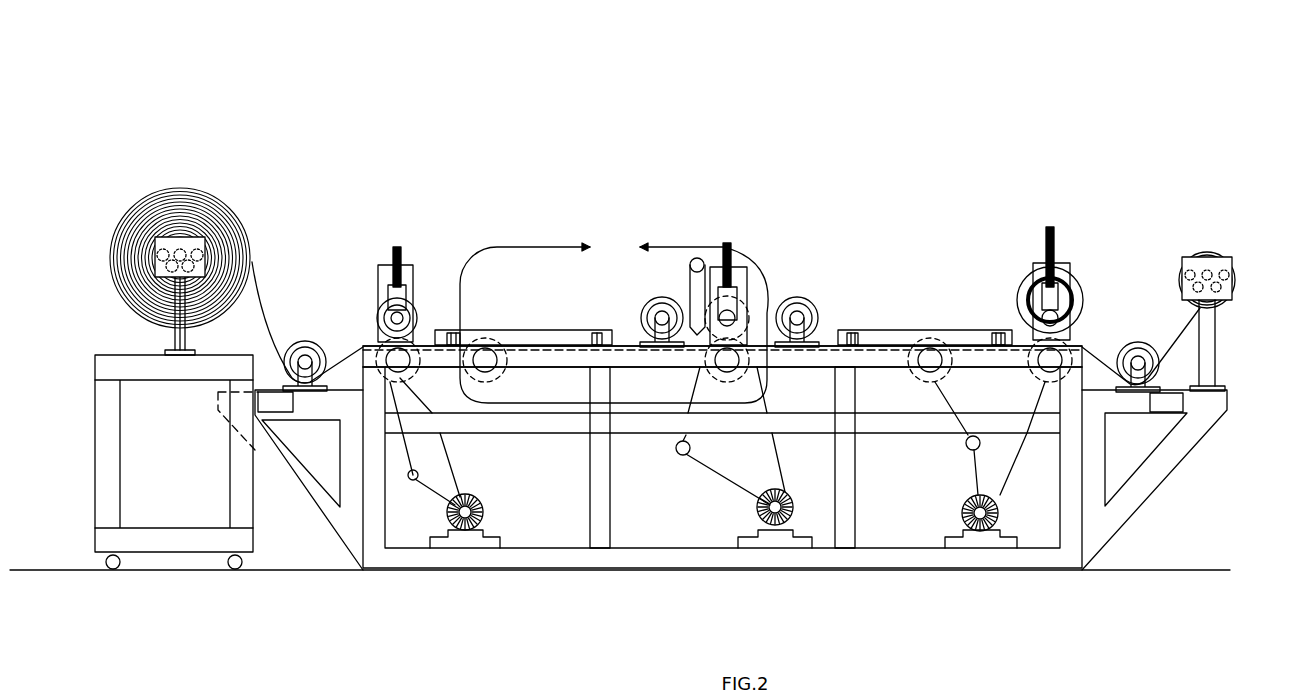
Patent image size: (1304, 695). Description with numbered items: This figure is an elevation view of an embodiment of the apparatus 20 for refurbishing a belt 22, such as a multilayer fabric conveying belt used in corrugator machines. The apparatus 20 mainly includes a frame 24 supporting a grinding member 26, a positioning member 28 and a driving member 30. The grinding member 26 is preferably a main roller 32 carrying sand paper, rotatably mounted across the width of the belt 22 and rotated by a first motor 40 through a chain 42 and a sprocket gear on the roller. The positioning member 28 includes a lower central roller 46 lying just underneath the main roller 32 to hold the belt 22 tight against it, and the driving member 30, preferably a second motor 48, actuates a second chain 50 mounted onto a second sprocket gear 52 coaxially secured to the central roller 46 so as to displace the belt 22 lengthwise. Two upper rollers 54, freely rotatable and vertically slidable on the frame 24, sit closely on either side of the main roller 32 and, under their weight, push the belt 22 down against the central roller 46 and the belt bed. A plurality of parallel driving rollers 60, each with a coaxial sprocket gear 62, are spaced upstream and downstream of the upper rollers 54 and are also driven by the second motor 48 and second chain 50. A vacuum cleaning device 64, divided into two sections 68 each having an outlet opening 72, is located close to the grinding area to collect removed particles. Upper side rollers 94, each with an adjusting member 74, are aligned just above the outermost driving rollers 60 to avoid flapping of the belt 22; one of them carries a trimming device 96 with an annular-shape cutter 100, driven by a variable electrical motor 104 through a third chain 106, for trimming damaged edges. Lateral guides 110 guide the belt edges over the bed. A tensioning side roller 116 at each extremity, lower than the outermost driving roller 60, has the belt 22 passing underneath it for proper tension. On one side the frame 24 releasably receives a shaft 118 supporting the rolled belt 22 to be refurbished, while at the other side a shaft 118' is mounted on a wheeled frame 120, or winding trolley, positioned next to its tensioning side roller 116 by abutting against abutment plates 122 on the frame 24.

The apparatus 20 is at (748, 103).
The belt 22 is at (253, 293).
The frame 24 is at (1040, 568).
The grinding member 26 is at (790, 245).
The positioning member 28 is at (856, 265).
The driving member 30 is at (465, 595).
The main roller 32 is at (766, 317).
The first motor 40 is at (757, 512).
The chain 42 is at (717, 482).
The lower central roller 46 is at (733, 403).
The second motor 48 is at (483, 514).
The second chain 50 is at (867, 368).
The second sprocket gear 52 is at (677, 367).
The upper rollers 54 is at (665, 298).
The driving rollers 60 is at (468, 365).
The sprocket gear 62 is at (500, 357).
The vacuum cleaning device 64 is at (727, 243).
The section 68 is at (688, 327).
The outlet opening 72 is at (697, 258).
The adjusting member 74 is at (417, 260).
The upper side rollers 94 is at (378, 332).
The trimming device 96 is at (1075, 283).
The annular-shape cutter 100 is at (1085, 300).
The variable electrical motor 104 is at (960, 508).
The third chain 106 is at (965, 473).
The lateral guides 110 is at (885, 331).
The tensioning side roller 116 is at (300, 342).
The shaft 118 is at (1230, 307).
The shaft 118' is at (202, 238).
The wheeled frame 120 is at (95, 462).
The abutment plates 122 is at (293, 405).